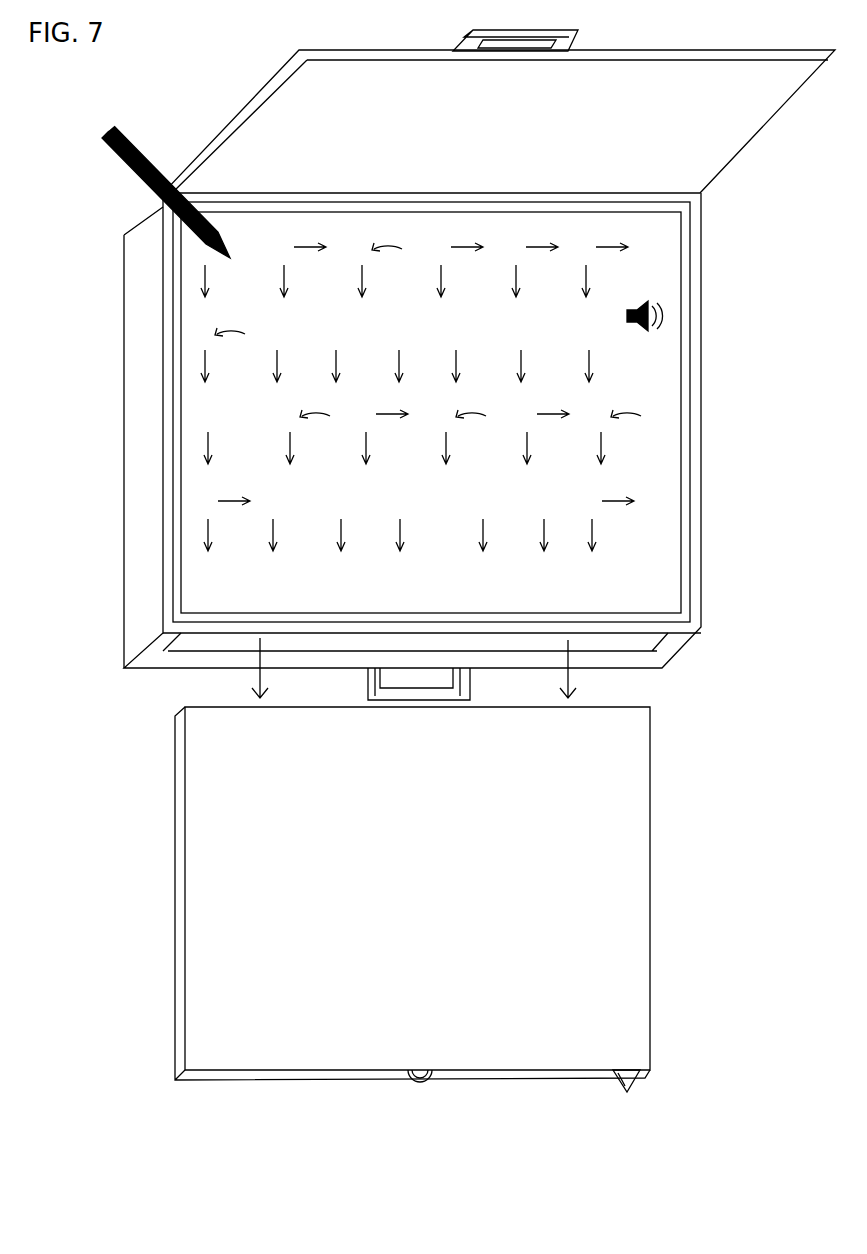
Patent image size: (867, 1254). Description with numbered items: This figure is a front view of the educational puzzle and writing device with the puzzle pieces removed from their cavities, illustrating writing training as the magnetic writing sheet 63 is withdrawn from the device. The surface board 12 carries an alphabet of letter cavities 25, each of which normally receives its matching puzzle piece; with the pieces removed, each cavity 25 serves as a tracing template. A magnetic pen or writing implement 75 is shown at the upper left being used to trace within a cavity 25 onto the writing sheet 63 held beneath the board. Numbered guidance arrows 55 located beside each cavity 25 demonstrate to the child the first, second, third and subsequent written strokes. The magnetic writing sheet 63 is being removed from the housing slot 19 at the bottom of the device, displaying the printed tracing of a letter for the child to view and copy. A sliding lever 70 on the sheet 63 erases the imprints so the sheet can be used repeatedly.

The surface board 12 is at (653, 406).
The housing slot 19 is at (633, 642).
The cavity 25 is at (213, 370).
The numbered guidance arrows 55 is at (207, 448).
The magnetic writing sheet 63 is at (633, 916).
The sliding lever 70 is at (637, 1082).
The magnetic pen or writing implement 75 is at (148, 193).